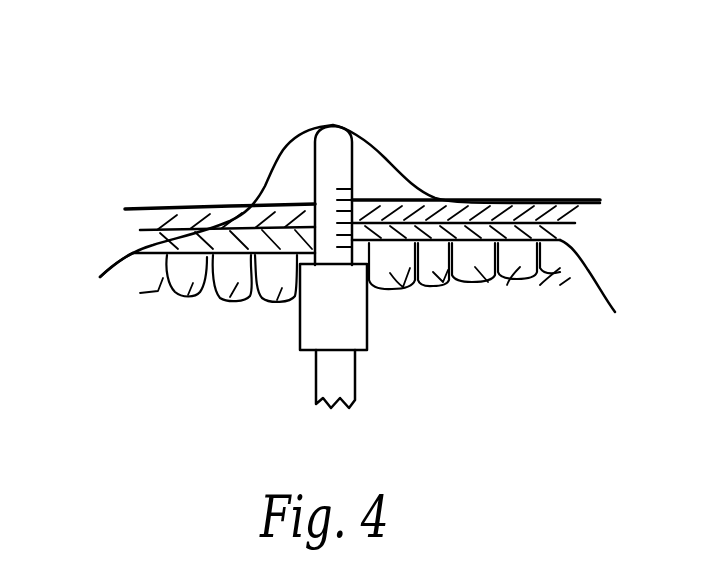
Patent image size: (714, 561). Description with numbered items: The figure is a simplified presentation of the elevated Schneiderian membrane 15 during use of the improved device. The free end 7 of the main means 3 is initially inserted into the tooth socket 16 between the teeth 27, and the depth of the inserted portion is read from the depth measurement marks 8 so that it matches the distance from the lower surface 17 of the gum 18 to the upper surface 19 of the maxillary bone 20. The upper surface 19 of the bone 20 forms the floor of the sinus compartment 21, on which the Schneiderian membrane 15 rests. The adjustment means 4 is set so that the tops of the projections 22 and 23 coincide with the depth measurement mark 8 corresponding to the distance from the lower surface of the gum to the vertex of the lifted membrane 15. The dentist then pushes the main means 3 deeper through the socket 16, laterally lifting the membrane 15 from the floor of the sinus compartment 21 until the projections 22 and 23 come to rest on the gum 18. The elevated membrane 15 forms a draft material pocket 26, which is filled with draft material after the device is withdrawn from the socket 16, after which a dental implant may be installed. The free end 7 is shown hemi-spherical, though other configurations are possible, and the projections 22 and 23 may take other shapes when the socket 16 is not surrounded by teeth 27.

The main means 3 is at (340, 372).
The adjustment means 4 is at (335, 327).
The free end 7 is at (340, 130).
The depth measurement marks 8 is at (340, 191).
The Schneiderian membrane 15 is at (375, 188).
The tooth socket 16 is at (374, 295).
The lower surface of the gum 17 is at (374, 299).
The gum 18 is at (150, 247).
The upper surface of the bone 19 is at (233, 206).
The maxillary bone 20 is at (150, 228).
The sinus compartment 21 is at (283, 136).
The projection 22 is at (450, 203).
The projection 23 is at (305, 258).
The draft material pocket 26 is at (396, 187).
The teeth 27 is at (158, 292).